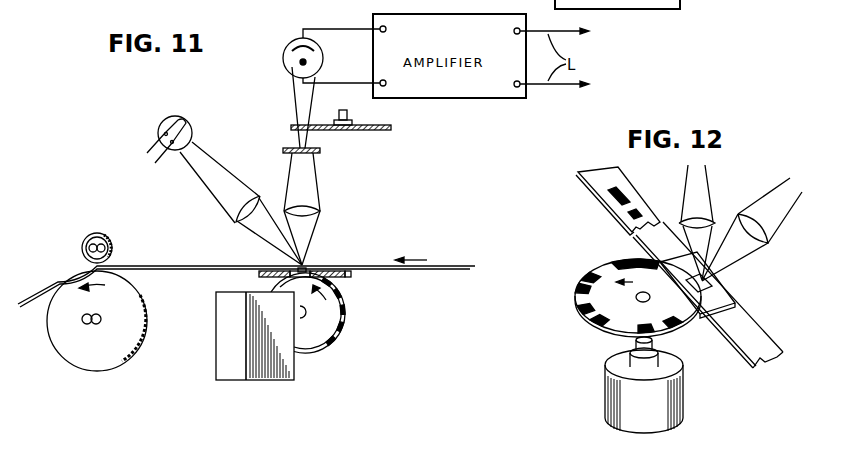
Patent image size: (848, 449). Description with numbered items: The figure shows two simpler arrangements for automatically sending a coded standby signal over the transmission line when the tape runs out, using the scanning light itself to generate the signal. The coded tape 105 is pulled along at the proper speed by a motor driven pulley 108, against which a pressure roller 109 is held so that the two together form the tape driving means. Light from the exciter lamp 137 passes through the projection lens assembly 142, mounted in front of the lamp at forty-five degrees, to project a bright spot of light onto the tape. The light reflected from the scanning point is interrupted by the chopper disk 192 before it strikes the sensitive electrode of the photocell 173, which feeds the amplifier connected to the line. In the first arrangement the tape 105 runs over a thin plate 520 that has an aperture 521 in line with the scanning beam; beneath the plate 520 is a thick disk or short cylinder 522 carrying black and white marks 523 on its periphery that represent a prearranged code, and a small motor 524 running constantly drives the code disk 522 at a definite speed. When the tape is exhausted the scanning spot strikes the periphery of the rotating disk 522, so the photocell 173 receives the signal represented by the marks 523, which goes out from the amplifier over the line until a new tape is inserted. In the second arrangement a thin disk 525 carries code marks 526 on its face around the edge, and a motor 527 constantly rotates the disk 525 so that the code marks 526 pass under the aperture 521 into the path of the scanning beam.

In FIG. 11, the tape 105 is at (443, 266).
In FIG. 12, the tape 105 is at (602, 178).
In FIG. 11, the motor driven pulley 108 is at (75, 355).
In FIG. 11, the pressure roller 109 is at (95, 233).
In FIG. 11, the exciter lamp 137 is at (166, 118).
In FIG. 11, the projection lens assembly 142 is at (240, 208).
In FIG. 11, the photocell 173 is at (284, 60).
In FIG. 11, the chopper disk 192 is at (370, 130).
In FIG. 11, the thin plate 520 is at (262, 273).
In FIG. 11, the aperture 521 is at (306, 268).
In FIG. 12, the aperture 521 is at (714, 286).
In FIG. 11, the code disk 522 is at (305, 340).
In FIG. 11, the black and white marks 523 is at (349, 316).
In FIG. 11, the small motor 524 is at (225, 364).
In FIG. 12, the thin disk 525 is at (585, 298).
In FIG. 12, the code marks 526 is at (603, 259).
In FIG. 12, the motor 527 is at (620, 397).